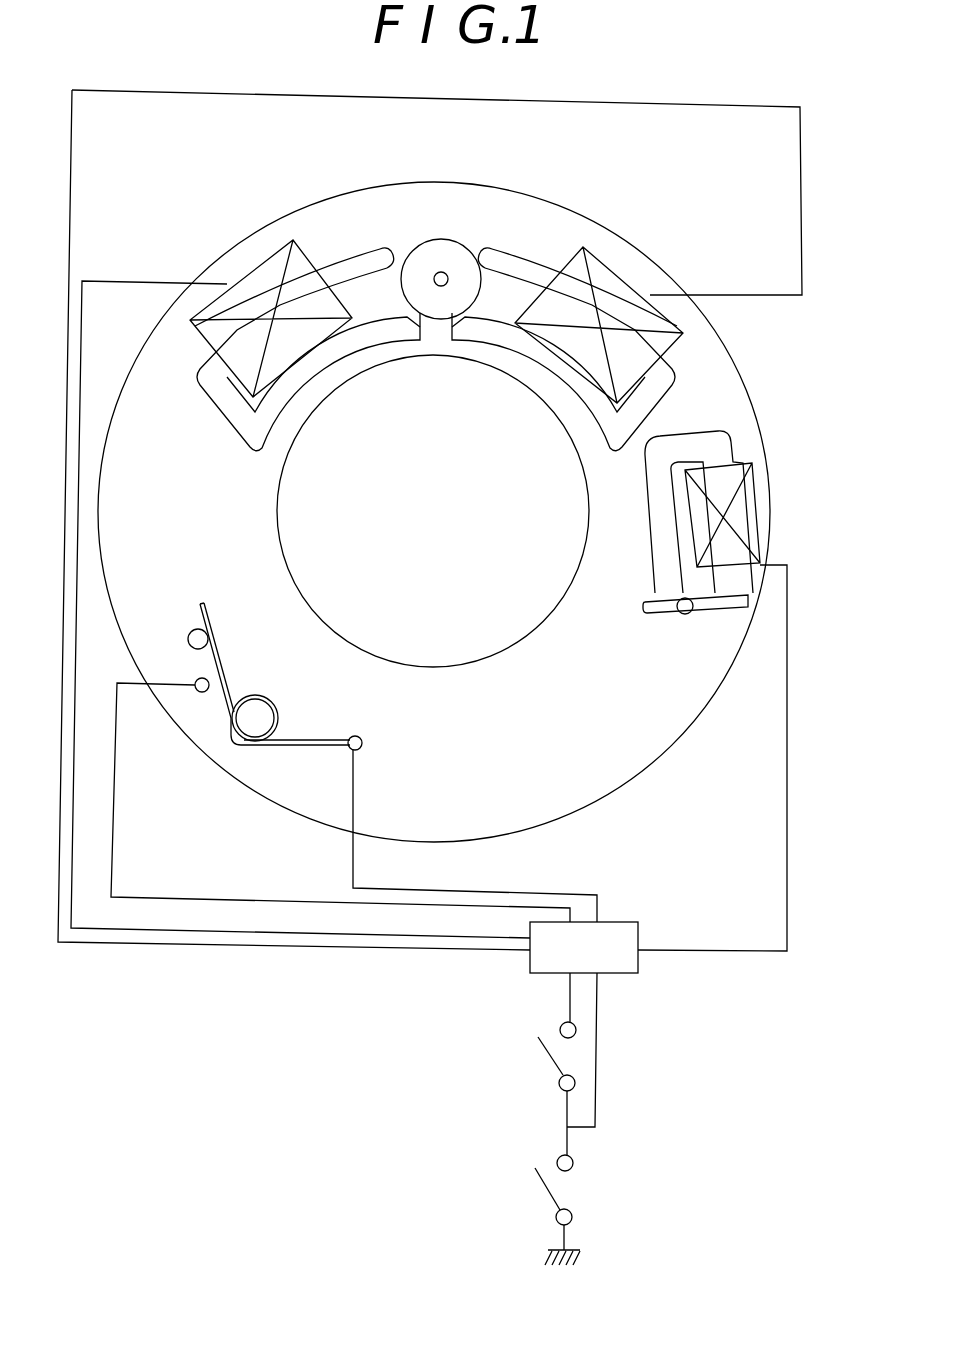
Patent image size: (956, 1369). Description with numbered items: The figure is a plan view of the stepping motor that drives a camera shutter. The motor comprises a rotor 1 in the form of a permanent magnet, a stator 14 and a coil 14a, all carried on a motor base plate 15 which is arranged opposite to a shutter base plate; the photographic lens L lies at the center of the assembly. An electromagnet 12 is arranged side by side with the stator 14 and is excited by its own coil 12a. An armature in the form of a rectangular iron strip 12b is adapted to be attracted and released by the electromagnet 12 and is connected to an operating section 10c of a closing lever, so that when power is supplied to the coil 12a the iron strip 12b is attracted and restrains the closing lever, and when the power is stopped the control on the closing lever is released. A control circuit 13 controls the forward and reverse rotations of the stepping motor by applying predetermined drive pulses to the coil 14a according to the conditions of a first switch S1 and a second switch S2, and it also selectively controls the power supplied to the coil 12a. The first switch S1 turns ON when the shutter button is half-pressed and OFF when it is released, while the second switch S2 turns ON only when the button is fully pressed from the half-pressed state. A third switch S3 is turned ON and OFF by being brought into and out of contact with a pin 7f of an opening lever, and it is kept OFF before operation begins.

The rotor 1 is at (461, 244).
The stator 14 is at (366, 257).
The coil 14a is at (281, 255).
The electromagnet 12 is at (717, 450).
The coil 12a is at (758, 487).
The iron strip 12b is at (746, 592).
The operating section 10c is at (685, 614).
The control circuit 13 is at (607, 957).
The motor base plate 15 is at (620, 790).
The photographic lens L is at (446, 508).
The pin 7f is at (208, 638).
The first switch S1 is at (533, 1187).
The second switch S2 is at (532, 1055).
The third switch S3 is at (247, 683).